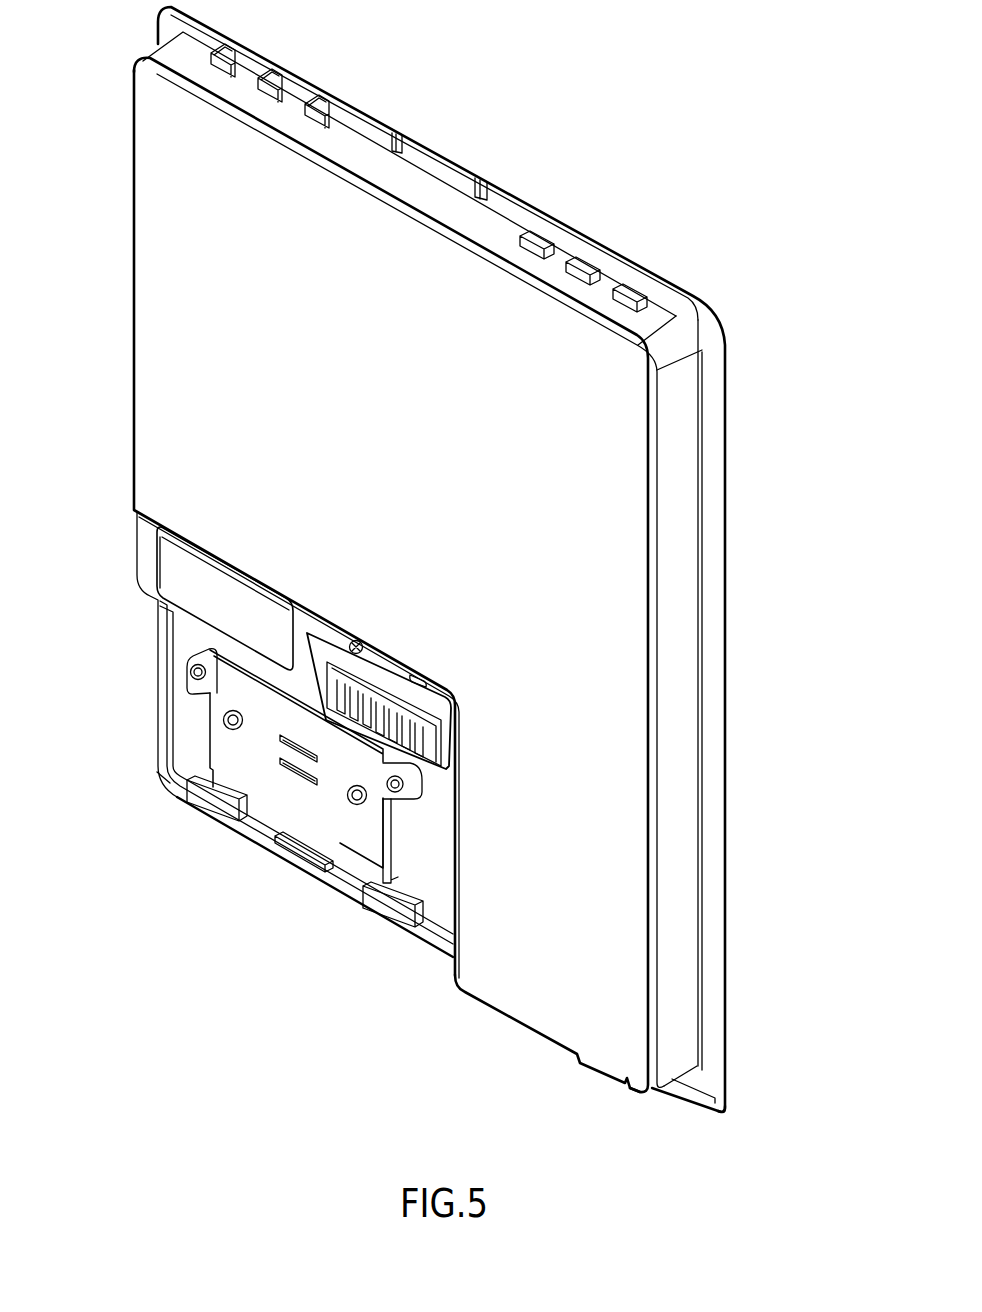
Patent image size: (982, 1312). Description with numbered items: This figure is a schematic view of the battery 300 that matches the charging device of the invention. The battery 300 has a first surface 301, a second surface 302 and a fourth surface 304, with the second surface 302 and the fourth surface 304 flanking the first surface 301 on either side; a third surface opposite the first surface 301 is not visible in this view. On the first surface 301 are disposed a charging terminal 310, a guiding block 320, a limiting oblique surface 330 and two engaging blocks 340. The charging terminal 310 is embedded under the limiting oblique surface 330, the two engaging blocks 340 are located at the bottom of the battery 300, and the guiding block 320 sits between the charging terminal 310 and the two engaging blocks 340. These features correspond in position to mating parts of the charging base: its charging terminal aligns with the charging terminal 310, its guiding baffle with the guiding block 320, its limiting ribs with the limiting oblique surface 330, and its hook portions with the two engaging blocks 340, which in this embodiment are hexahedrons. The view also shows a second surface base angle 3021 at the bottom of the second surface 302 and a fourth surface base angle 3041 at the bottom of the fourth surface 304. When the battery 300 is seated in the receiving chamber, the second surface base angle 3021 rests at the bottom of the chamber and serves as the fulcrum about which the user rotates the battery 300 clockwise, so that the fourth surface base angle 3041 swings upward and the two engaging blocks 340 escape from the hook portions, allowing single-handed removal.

The battery 300 is at (727, 928).
The first surface 301 is at (163, 418).
The second surface 302 is at (682, 977).
The second surface base angle 3021 is at (688, 1073).
The fourth surface 304 is at (135, 470).
The fourth surface base angle 3041 is at (157, 772).
The charging terminal 310 is at (363, 720).
The guiding block 320 is at (398, 800).
The limiting oblique surface 330 is at (322, 690).
The engaging blocks 340 is at (208, 802).